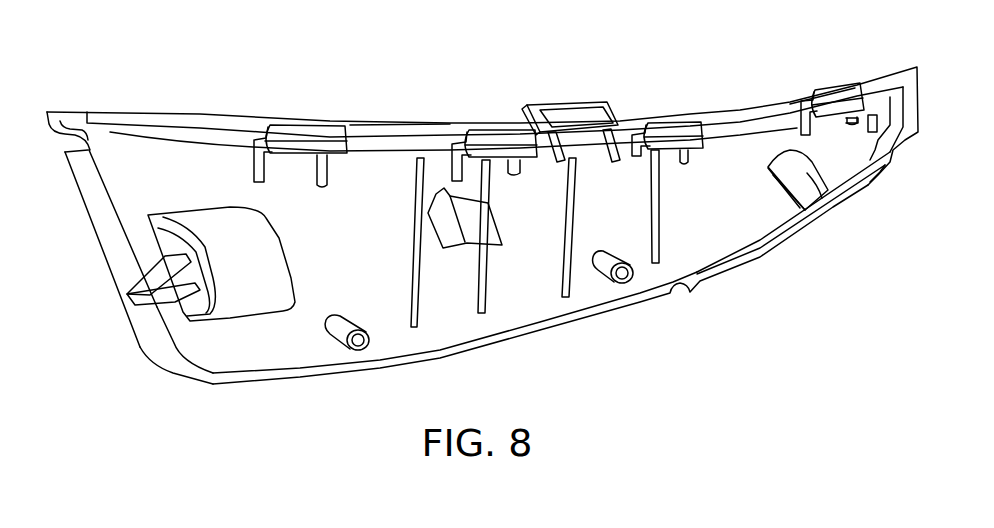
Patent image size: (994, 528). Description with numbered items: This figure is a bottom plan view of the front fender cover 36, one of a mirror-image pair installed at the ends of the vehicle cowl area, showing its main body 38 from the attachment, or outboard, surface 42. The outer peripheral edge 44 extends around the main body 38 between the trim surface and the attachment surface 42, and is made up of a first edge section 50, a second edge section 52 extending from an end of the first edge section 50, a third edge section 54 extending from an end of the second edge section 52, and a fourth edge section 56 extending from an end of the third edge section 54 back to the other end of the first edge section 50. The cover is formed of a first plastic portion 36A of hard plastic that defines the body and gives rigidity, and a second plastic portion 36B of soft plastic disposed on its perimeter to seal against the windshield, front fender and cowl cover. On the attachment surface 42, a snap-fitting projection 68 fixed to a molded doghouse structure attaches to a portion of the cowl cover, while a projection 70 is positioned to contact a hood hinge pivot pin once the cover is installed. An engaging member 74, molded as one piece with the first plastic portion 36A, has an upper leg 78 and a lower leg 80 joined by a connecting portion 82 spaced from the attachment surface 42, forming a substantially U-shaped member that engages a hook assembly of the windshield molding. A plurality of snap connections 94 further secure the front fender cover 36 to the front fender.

The front fender cover 36 is at (135, 100).
The first plastic portion 36A is at (147, 172).
The second plastic portion 36B is at (150, 362).
The main body 38 is at (728, 108).
The attachment surface 42 is at (710, 222).
The outer peripheral edge 44 is at (393, 122).
The first edge section 50 is at (782, 100).
The second edge section 52 is at (204, 113).
The third edge section 54 is at (278, 387).
The fourth edge section 56 is at (869, 175).
The snap-fitting projection 68 is at (132, 283).
The projection 70 is at (497, 220).
The engaging member 74 is at (783, 208).
The upper leg 78 is at (785, 162).
The lower leg 80 is at (797, 203).
The connecting portion 82 is at (807, 175).
The snap connections 94 is at (310, 130).